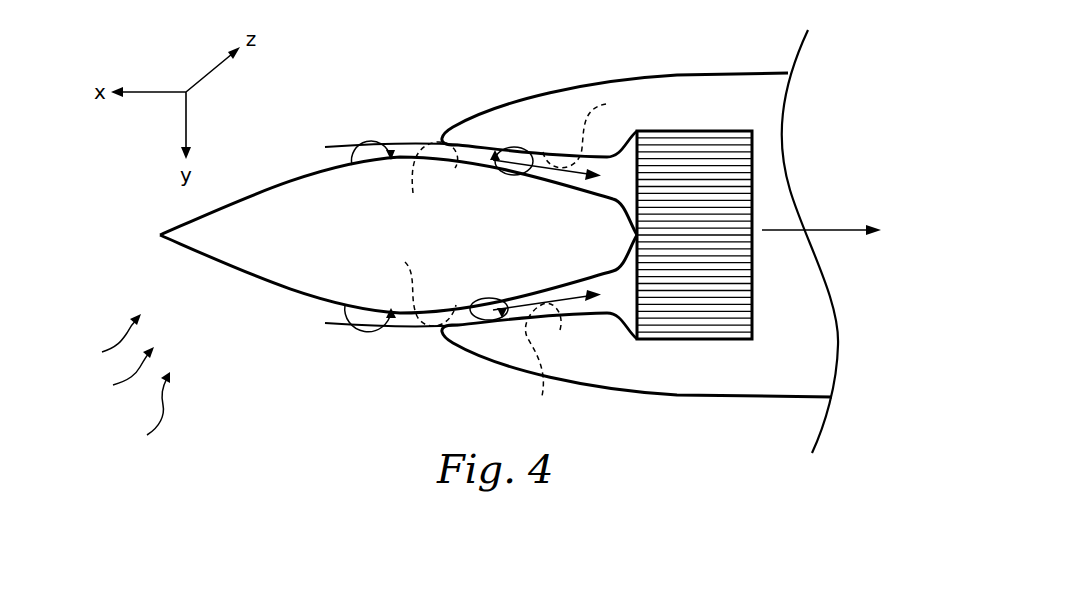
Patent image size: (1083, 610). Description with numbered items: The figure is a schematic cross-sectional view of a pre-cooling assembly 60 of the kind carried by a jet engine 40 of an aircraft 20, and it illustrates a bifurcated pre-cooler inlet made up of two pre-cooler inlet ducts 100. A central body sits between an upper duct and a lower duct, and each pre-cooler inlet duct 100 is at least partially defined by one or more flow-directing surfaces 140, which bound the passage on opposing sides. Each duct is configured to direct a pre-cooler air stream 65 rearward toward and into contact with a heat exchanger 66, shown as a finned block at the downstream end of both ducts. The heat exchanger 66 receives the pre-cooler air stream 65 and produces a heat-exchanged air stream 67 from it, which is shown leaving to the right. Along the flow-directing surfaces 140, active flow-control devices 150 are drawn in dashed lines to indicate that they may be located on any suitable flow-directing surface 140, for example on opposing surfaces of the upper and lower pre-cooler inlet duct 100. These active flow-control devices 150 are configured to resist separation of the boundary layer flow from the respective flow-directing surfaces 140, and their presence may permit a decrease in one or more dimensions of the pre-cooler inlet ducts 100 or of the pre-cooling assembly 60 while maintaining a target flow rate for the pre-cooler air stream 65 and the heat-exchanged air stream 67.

The aircraft 20 is at (106, 339).
The jet engine 40 is at (120, 372).
The pre-cooling assembly 60 is at (143, 410).
The pre-cooler air stream 65 is at (338, 147).
The heat exchanger 66 is at (716, 131).
The heat-exchanged air stream 67 is at (847, 230).
The pre-cooler inlet duct 100 is at (413, 132).
The flow-directing surface 140 is at (352, 165).
The active flow-control device 150 is at (503, 255).